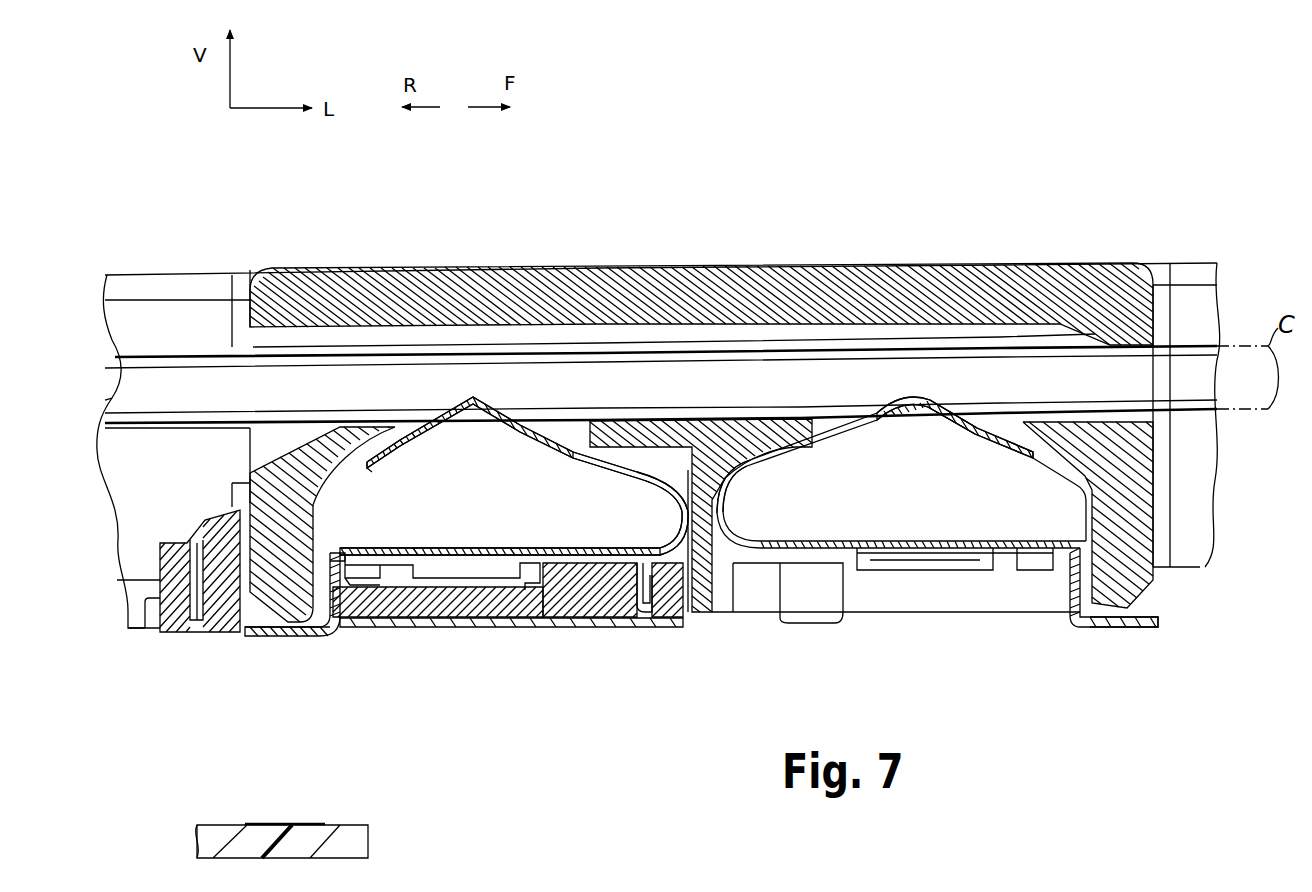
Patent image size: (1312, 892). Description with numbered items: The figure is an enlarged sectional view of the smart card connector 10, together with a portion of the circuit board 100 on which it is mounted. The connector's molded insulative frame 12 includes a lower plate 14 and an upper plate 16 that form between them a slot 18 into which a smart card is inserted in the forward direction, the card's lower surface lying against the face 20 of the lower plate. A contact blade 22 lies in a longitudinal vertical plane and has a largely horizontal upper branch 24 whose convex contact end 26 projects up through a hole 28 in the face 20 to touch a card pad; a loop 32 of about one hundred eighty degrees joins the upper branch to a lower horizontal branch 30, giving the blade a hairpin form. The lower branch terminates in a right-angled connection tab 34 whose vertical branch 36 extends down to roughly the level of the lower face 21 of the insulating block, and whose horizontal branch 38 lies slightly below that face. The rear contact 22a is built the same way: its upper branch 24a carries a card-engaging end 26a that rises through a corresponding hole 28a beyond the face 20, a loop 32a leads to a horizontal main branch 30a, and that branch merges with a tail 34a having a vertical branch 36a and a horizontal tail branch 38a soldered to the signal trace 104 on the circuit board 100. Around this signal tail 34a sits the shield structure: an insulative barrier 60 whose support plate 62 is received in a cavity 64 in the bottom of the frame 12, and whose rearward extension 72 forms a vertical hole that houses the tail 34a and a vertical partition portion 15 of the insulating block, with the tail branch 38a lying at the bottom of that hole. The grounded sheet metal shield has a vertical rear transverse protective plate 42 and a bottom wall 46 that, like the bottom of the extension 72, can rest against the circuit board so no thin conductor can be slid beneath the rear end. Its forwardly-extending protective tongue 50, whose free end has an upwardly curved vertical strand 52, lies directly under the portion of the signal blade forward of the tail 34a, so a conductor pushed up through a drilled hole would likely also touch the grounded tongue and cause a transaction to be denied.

The smart card connector 10 is at (846, 228).
The frame 12 is at (232, 316).
The lower plate 14 is at (1100, 446).
The vertical partition portion 15 is at (292, 558).
The upper plate 16 is at (720, 300).
The slot 18 is at (160, 392).
The face of the lower plate 20 is at (773, 421).
The lower horizontal face 21 is at (700, 617).
The contact blade 22 is at (975, 397).
The rear contact 22a is at (535, 392).
The upper branch 24 is at (850, 455).
The front housing 24a is at (568, 470).
The contact end 26 is at (915, 405).
The card-engaging end 26a is at (470, 400).
The hole 28 is at (1012, 420).
The plate end portion 28a is at (388, 442).
The lower horizontal branch 30 is at (948, 545).
The horizontal main branch 30a is at (455, 545).
The loop 32 is at (725, 520).
The loop 32a is at (678, 512).
The connection tab 34 is at (1087, 630).
The tail 34a is at (320, 647).
The vertical branch 36 is at (1072, 590).
The vertical branch 36a is at (345, 634).
The horizontal branch 38 is at (1122, 628).
The horizontal tail branch 38a is at (276, 640).
The vertical rear transverse protective plate 42 is at (145, 628).
The bottom wall 46 is at (205, 636).
The forwardly-extending protective tongue 50 is at (437, 640).
The vertical strand 52 is at (643, 588).
The insulative barrier 60 is at (690, 553).
The support plate 62 is at (563, 595).
The cavity 64 is at (652, 600).
The rearward extension 72 is at (172, 638).
The circuit board 100 is at (370, 848).
The signal trace 104 is at (310, 825).